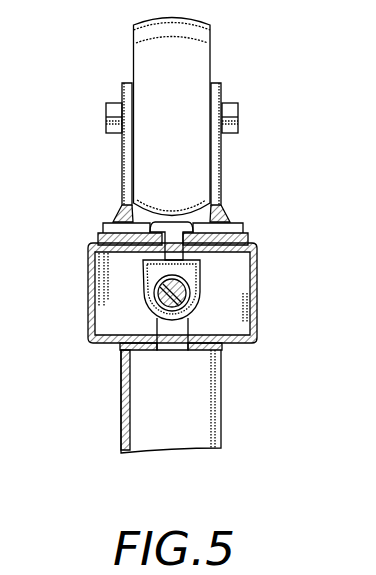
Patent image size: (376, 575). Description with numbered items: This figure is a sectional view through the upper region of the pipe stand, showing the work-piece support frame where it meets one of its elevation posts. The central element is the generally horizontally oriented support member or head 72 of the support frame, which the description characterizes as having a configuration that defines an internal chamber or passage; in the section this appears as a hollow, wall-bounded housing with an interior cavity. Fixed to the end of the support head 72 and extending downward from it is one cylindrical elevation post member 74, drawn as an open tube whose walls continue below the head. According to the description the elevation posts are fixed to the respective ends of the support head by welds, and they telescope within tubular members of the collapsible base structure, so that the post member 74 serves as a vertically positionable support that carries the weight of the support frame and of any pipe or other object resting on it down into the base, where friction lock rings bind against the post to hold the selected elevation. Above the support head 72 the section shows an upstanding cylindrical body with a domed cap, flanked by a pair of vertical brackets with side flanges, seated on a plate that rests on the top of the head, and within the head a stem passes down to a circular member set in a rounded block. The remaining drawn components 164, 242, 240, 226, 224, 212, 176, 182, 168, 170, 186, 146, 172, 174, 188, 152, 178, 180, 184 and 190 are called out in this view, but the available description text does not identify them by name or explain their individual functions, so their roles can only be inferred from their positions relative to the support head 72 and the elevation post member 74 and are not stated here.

The valve assembly 164 is at (243, 42).
The cap 242 is at (136, 40).
The mounting flange 240 is at (238, 118).
The left support bracket 226 is at (121, 170).
The right support bracket 224 is at (225, 167).
The mounting plate 212 is at (197, 220).
The housing 176 is at (257, 247).
The gasket 182 is at (98, 244).
The left housing wall 168 is at (88, 271).
The right housing wall 170 is at (257, 264).
The valve body 186 is at (150, 286).
The valve member 146 is at (200, 288).
The housing sidewall 172 is at (88, 311).
The housing sidewall 174 is at (257, 315).
The valve seat 188 is at (155, 313).
The housing bottom wall 152 is at (257, 326).
The support head 72 is at (90, 345).
The outlet flange 178 is at (250, 345).
The outlet opening 180 is at (222, 351).
The cylindrical elevation post member 74 is at (222, 419).
The conduit wall 184 is at (124, 353).
The valve stem 190 is at (176, 337).